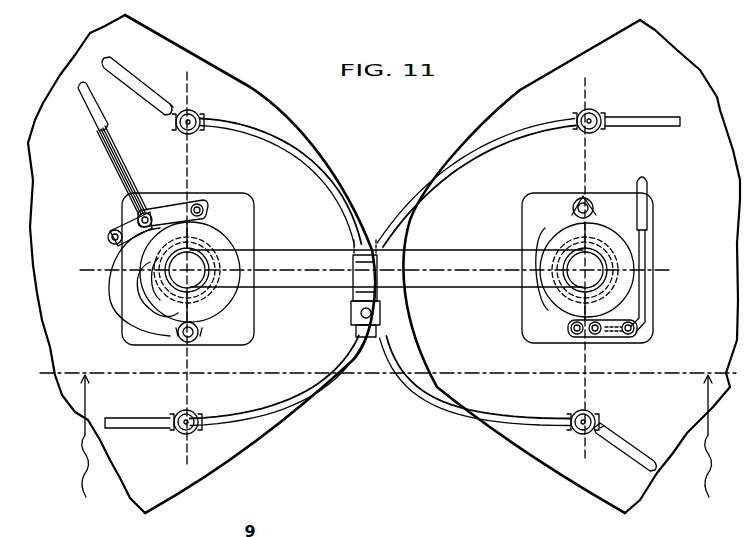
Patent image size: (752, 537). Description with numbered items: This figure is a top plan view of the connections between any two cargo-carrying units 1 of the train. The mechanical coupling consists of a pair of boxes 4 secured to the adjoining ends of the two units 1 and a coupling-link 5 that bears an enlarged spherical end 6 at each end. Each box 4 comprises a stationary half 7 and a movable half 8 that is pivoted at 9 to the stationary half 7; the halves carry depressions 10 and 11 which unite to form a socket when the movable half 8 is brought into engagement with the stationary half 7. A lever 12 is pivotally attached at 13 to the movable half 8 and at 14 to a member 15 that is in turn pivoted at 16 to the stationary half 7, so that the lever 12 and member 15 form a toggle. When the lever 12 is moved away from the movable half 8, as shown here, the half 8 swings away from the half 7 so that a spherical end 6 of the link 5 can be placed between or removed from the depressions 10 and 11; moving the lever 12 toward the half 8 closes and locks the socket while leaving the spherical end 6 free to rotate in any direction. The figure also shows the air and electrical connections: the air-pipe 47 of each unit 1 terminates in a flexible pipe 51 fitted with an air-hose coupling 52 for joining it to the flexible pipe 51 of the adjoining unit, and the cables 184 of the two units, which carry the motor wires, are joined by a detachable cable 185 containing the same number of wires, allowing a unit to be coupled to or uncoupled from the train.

The cargo-carrying unit 1 is at (384, 264).
The box 4 is at (387, 269).
The coupling-link 5 is at (430, 250).
The enlarged spherical end 6 is at (157, 258).
The stationary half 7 is at (227, 302).
The movable half 8 is at (112, 290).
The pivot 9 is at (197, 342).
The depression 10 is at (204, 242).
The depression 11 is at (137, 308).
The lever 12 is at (96, 110).
The pivot 13 is at (108, 236).
The pivot 14 is at (140, 215).
The member 15 is at (170, 212).
The pivot 16 is at (200, 206).
The air-pipe 47 is at (151, 82).
The flexible pipe 51 is at (302, 148).
The air-hose coupling 52 is at (357, 318).
The cable 184 is at (645, 118).
The detachable cable 185 is at (448, 170).